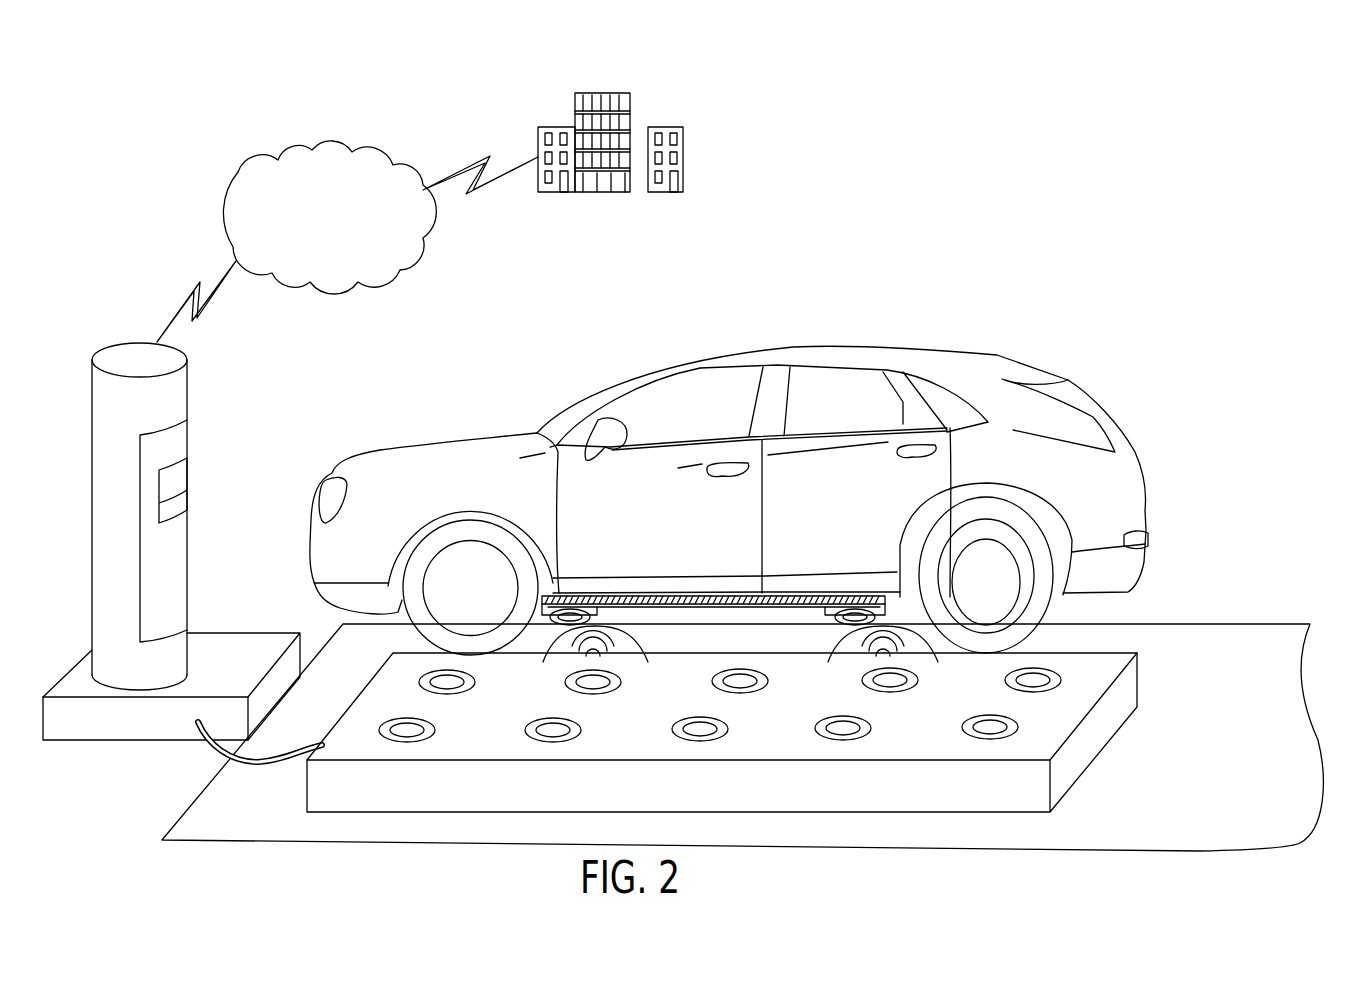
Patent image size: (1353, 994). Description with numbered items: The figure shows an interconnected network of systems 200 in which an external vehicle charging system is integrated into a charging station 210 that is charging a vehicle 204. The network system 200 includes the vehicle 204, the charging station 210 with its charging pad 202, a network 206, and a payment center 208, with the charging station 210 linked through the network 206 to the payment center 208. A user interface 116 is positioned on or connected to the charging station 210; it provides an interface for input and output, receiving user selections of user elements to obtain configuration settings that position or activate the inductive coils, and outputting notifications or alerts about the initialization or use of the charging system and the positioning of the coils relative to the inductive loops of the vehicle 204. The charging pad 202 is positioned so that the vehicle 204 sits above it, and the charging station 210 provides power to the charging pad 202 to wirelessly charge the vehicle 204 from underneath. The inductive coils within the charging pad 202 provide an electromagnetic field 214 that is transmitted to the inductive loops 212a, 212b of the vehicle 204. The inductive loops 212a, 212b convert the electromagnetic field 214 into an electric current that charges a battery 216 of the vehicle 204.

The interconnected network of systems 200 is at (74, 121).
The charging pad 202 is at (1107, 748).
The vehicle 204 is at (447, 442).
The network 206 is at (372, 292).
The payment center 208 is at (598, 193).
The charging station 210 is at (118, 343).
The user interface 116 is at (182, 477).
The inductive loop 212a is at (572, 627).
The inductive loop 212b is at (851, 627).
The electromagnetic field 214 is at (640, 645).
The battery 216 is at (792, 596).